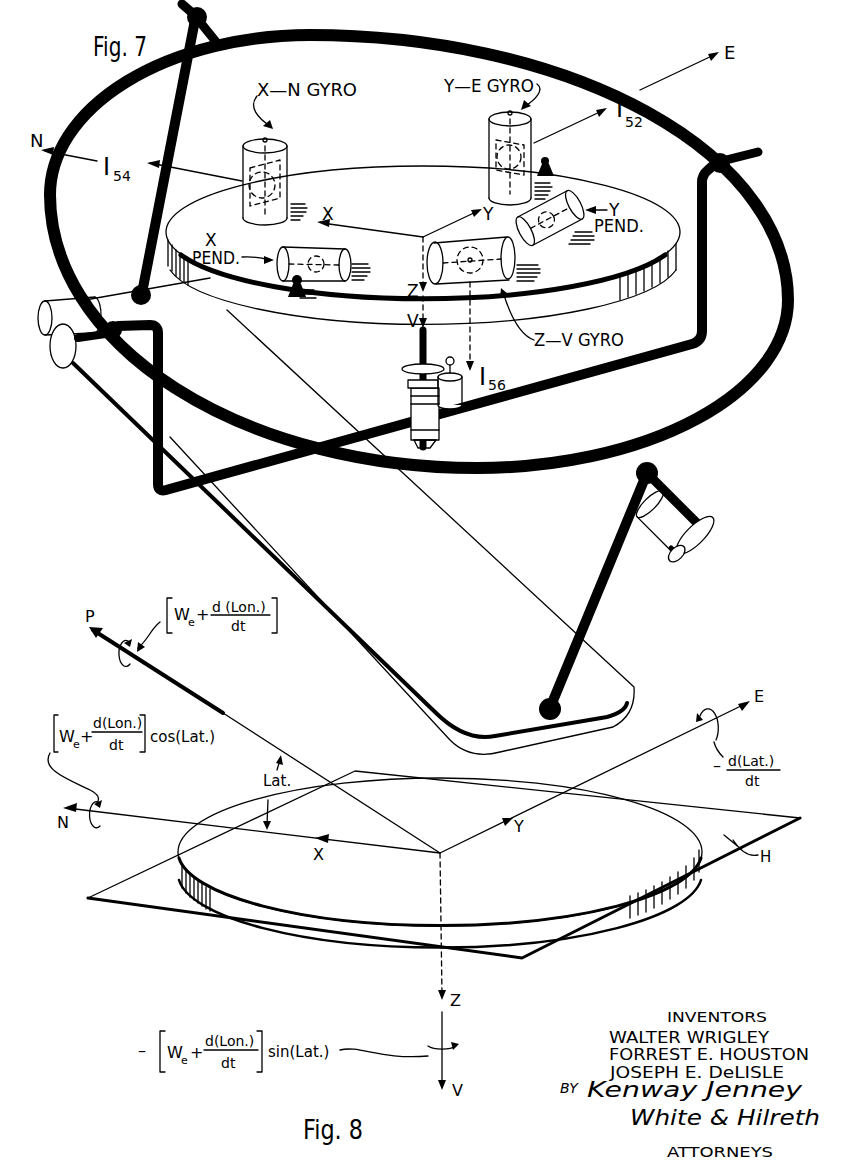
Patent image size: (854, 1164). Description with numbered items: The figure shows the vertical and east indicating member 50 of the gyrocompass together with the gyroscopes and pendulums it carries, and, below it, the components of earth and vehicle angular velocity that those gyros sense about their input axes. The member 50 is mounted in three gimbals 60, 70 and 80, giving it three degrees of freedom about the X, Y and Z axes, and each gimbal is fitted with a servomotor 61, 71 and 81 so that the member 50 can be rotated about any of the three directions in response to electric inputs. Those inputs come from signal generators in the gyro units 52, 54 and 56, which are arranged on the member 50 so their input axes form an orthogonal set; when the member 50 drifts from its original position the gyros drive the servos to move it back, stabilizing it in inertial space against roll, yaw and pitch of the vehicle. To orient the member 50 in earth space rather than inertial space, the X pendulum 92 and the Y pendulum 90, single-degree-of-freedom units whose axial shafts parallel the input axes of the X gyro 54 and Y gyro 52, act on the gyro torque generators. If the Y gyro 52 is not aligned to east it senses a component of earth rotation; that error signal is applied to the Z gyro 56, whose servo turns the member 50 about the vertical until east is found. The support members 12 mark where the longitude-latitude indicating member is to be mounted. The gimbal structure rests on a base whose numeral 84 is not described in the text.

In FIG. 7, the support members 12 is at (551, 164).
In FIG. 7, the member 50 is at (634, 258).
In FIG. 8, the member 50 is at (235, 890).
In FIG. 7, the Y gyro 52 is at (489, 140).
In FIG. 7, the X gyro 54 is at (290, 150).
In FIG. 7, the Z gyro 56 is at (524, 265).
In FIG. 7, the gimbal 60 is at (420, 337).
In FIG. 7, the servomotor 61 is at (453, 397).
In FIG. 7, the gimbal 70 is at (257, 470).
In FIG. 7, the servomotor 71 is at (63, 302).
In FIG. 7, the gimbal 80 is at (228, 400).
In FIG. 7, the servomotor 81 is at (650, 543).
In FIG. 7, the base plate 84 is at (512, 567).
In FIG. 7, the Y pendulum 90 is at (568, 228).
In FIG. 7, the X pendulum 92 is at (287, 268).